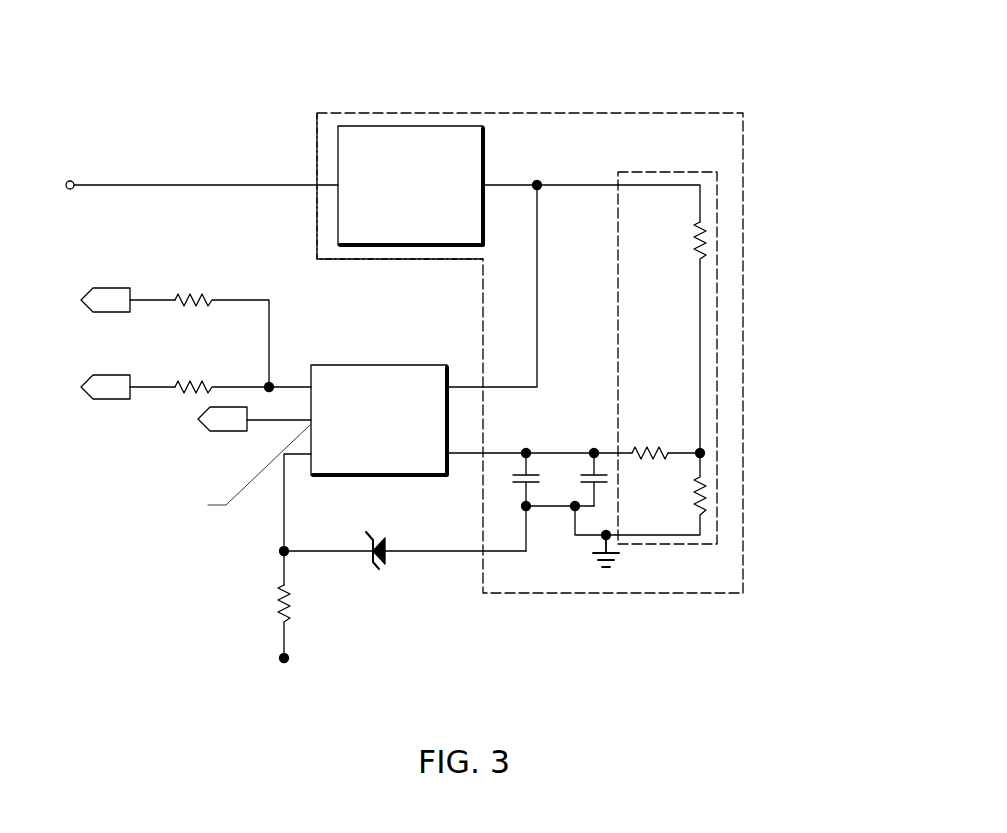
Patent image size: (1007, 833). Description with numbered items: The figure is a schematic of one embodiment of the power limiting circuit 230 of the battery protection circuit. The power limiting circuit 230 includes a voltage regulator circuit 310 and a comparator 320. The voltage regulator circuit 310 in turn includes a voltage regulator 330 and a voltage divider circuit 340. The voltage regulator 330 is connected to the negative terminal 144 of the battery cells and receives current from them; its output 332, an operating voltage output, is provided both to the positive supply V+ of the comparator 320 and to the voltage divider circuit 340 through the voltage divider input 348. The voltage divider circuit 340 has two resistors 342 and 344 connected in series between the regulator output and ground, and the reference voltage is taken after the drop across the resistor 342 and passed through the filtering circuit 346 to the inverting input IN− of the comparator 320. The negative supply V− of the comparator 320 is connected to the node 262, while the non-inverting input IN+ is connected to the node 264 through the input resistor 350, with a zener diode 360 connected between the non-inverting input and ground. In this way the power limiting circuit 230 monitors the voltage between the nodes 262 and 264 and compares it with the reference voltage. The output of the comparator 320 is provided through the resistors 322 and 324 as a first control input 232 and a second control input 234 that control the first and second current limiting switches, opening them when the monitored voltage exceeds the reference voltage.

The power limiting circuit 230 is at (768, 45).
The negative terminal 144 is at (71, 190).
The first control input 232 is at (113, 288).
The second control input 234 is at (112, 400).
The node 262 is at (228, 432).
The node 264 is at (285, 664).
The voltage regulator circuit 310 is at (743, 342).
The comparator 320 is at (380, 476).
The resistor 322 is at (194, 294).
The resistor 324 is at (194, 382).
The voltage regulator 330 is at (412, 246).
The output 332 is at (487, 184).
The voltage divider circuit 340 is at (717, 290).
The resistor 342 is at (695, 247).
The resistor 344 is at (695, 501).
The filtering circuit 346 is at (594, 446).
The voltage divider input 348 is at (618, 182).
The input resistor 350 is at (277, 610).
The zener diode 360 is at (367, 561).